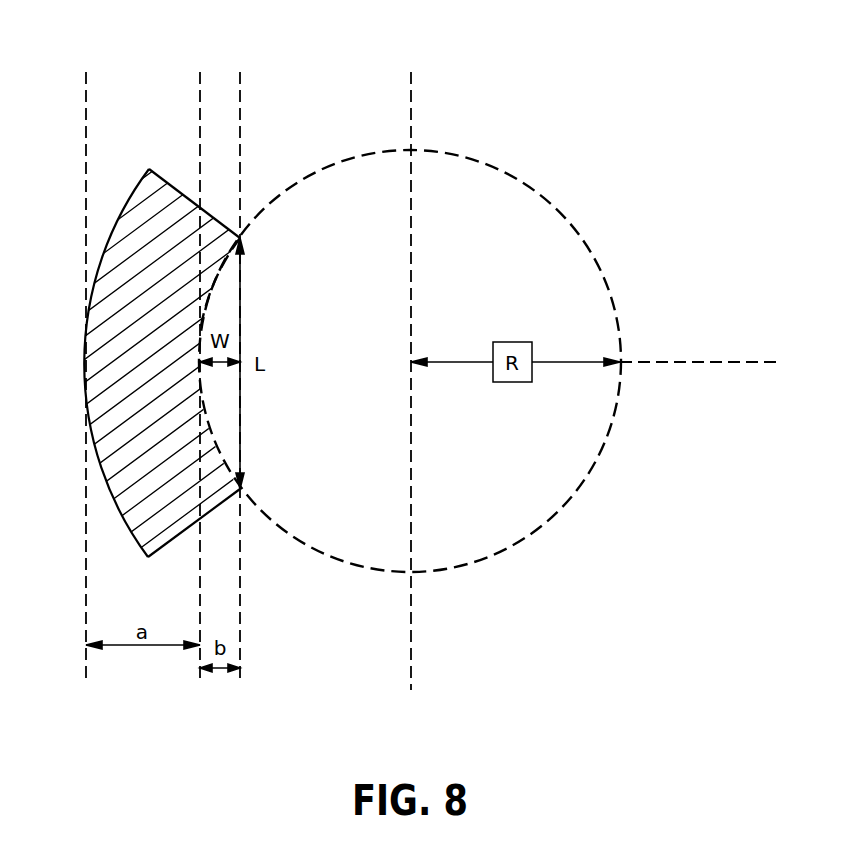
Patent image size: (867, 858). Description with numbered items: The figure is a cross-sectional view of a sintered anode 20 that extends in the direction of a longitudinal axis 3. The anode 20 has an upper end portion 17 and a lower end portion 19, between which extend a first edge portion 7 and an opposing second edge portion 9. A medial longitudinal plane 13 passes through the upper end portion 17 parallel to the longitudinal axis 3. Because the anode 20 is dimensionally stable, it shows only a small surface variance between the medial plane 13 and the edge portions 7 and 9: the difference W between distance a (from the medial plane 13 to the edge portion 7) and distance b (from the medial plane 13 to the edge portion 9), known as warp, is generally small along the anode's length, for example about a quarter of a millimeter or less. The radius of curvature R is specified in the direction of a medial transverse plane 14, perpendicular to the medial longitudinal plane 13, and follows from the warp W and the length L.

The longitudinal axis 3 is at (411, 369).
The first edge portion 7 is at (105, 475).
The second edge portion 9 is at (210, 430).
The medial longitudinal plane 13 is at (203, 92).
The medial transverse plane 14 is at (710, 363).
The upper end portion 17 is at (212, 217).
The lower end portion 19 is at (173, 539).
The anode 20 is at (149, 168).